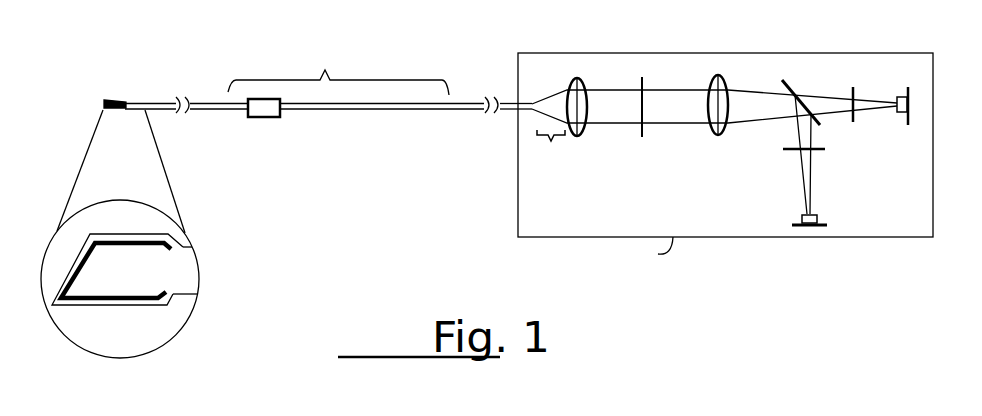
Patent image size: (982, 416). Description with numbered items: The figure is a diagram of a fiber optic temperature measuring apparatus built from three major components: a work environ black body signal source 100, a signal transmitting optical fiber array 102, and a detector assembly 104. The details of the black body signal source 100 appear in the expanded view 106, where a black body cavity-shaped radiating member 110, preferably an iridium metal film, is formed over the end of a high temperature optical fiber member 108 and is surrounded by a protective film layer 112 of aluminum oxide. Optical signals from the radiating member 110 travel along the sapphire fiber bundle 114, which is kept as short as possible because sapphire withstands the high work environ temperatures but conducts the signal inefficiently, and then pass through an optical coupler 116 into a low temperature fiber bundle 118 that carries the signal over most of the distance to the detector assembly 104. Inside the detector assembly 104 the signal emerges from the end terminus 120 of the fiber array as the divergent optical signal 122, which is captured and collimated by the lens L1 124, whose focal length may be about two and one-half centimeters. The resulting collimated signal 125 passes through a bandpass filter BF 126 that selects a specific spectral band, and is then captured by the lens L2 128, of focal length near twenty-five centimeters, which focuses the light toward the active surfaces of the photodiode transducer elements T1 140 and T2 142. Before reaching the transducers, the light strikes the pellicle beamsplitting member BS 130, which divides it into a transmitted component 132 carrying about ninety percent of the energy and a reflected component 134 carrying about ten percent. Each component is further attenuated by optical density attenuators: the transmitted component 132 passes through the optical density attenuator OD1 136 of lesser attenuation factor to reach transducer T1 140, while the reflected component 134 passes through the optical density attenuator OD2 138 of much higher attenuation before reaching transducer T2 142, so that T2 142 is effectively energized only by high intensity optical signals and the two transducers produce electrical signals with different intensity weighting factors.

The black body signal source 100 is at (117, 100).
The signal transmitting optical fiber array 102 is at (338, 70).
The detector assembly 104 is at (667, 53).
The expanded view 106 is at (63, 212).
The high temperature optical fiber member 108 is at (147, 111).
The black body cavity-shaped radiating member 110 is at (147, 300).
The protective film layer 112 is at (166, 230).
The sapphire fiber bundle 114 is at (208, 112).
The optical coupler 116 is at (257, 98).
The low temperature fiber bundle 118 is at (357, 110).
The end terminus 120 is at (532, 103).
The divergent optical signal 122 is at (547, 139).
The lens L1 124 is at (577, 132).
The collimated signal 125 is at (608, 88).
The bandpass filter BF 126 is at (642, 132).
The lens L2 128 is at (718, 135).
The beamsplitting member BS 130 is at (783, 78).
The transmitted component 132 is at (815, 96).
The reflected optical signal component 134 is at (797, 132).
The optical density attenuator OD1 136 is at (853, 124).
The optical density attenuator OD2 138 is at (825, 152).
The photodiode transducer element T1 140 is at (900, 118).
The photodiode transducer element T2 142 is at (792, 220).